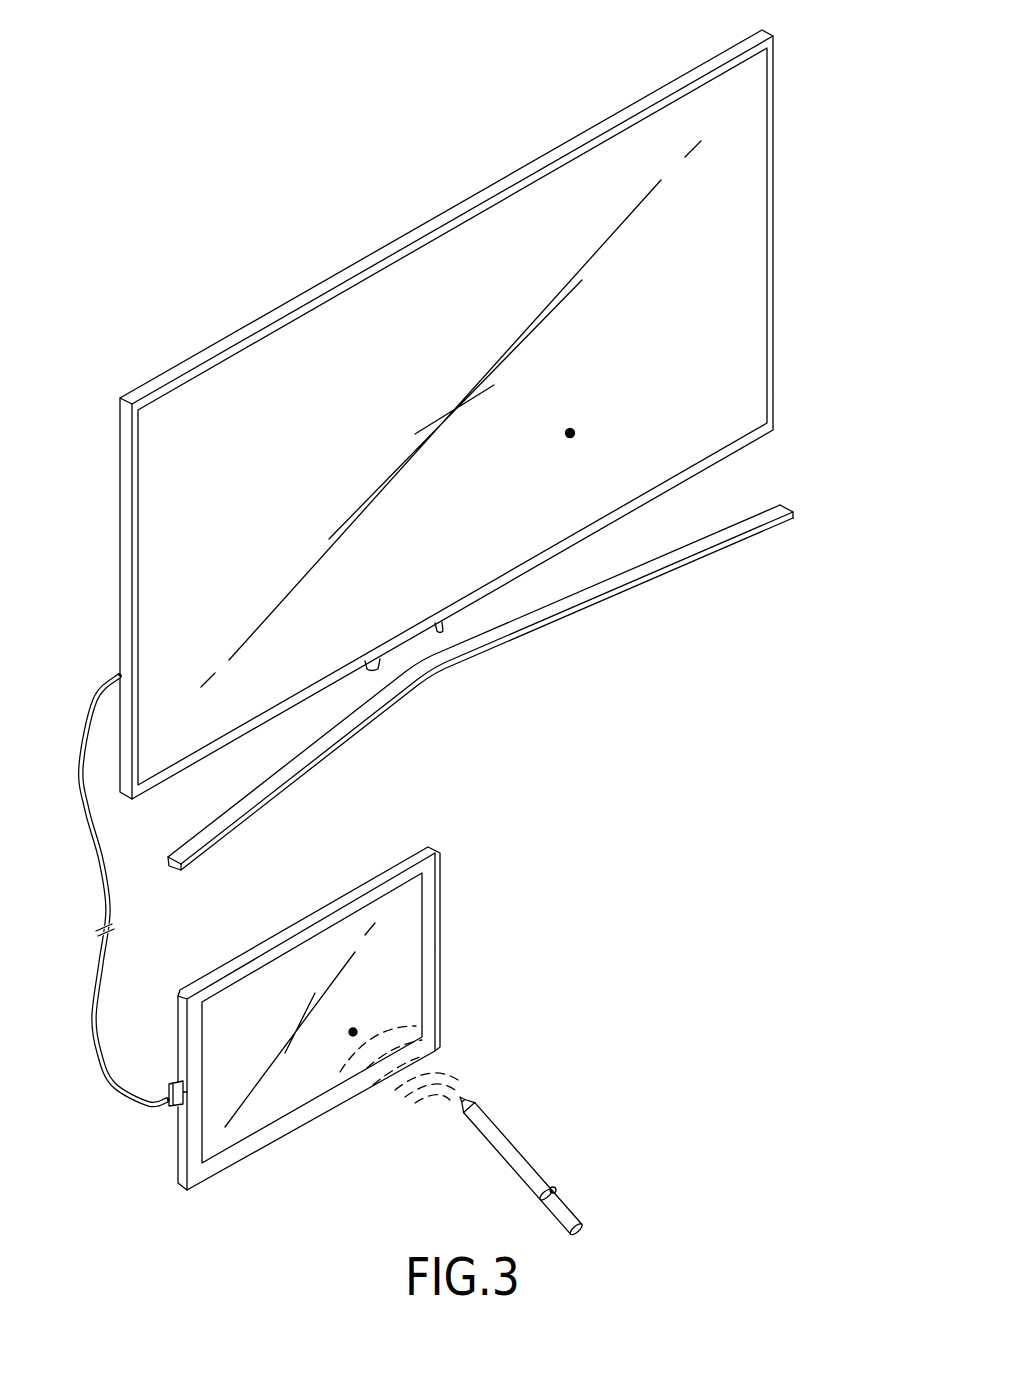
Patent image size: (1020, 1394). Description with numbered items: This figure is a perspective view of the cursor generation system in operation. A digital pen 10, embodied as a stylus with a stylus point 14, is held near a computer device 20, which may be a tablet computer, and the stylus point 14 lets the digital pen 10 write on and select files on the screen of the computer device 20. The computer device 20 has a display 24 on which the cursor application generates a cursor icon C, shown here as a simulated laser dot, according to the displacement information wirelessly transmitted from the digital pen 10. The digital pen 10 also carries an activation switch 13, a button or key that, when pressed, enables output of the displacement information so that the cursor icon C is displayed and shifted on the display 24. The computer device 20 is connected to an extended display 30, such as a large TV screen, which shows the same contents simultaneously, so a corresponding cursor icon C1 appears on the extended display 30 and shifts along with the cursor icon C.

The extended display 30 is at (326, 280).
The cursor icon C1 is at (575, 437).
The computer device 20 is at (354, 997).
The display 24 is at (390, 918).
The cursor icon C is at (356, 1030).
The digital pen 10 is at (568, 1148).
The stylus point 14 is at (468, 1094).
The activation switch 13 is at (563, 1190).